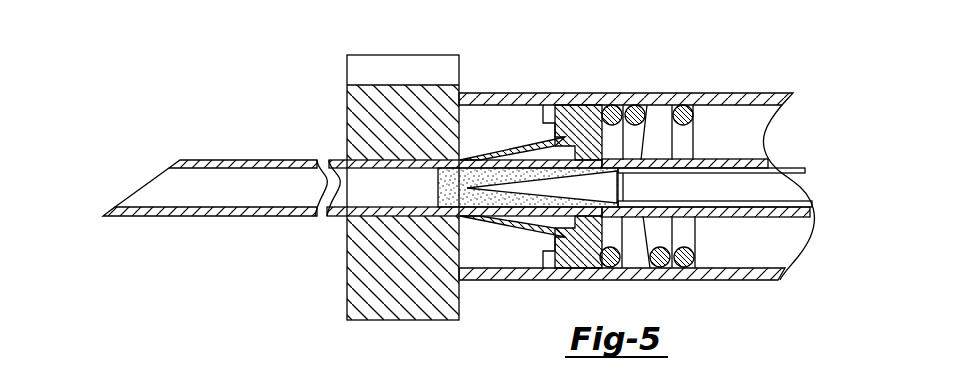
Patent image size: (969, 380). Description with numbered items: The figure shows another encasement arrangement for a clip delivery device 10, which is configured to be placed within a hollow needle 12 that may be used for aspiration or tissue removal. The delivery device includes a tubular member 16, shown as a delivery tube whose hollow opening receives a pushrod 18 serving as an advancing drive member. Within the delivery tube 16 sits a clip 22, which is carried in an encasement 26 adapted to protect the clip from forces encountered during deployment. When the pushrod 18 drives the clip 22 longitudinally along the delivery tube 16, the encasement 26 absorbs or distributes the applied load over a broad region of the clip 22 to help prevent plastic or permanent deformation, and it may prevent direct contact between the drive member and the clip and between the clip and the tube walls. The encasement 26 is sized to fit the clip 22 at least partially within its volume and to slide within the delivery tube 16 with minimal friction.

The clip delivery device 10 is at (735, 122).
The hollow needle 12 is at (233, 158).
The tubular member 16 is at (753, 160).
The pushrod 18 is at (773, 188).
The clip 22 is at (497, 180).
The encasement 26 is at (507, 197).